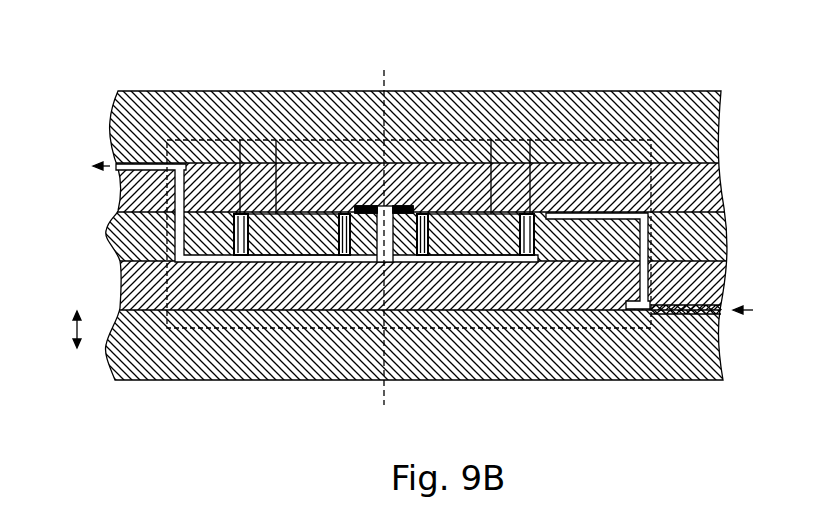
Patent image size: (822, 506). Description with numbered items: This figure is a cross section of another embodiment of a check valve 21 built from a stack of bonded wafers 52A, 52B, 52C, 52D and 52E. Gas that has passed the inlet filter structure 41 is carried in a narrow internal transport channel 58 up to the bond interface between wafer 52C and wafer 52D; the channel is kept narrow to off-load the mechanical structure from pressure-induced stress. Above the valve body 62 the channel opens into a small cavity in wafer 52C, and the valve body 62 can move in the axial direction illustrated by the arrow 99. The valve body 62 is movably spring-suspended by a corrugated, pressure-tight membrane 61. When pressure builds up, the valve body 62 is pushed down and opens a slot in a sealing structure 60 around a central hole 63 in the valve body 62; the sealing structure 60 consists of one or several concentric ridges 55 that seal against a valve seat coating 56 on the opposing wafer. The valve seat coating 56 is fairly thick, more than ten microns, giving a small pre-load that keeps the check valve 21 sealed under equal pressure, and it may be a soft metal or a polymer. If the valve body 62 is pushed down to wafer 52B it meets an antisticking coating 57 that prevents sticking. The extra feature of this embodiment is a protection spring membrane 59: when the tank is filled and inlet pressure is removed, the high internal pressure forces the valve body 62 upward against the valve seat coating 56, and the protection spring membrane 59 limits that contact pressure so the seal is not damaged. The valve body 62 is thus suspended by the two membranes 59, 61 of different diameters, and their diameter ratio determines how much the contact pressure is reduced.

The wafer 52E is at (710, 110).
The wafer 52D is at (712, 166).
The wafer 52C is at (714, 205).
The wafer 52B is at (715, 272).
The wafer 52A is at (710, 333).
The internal transport channel 58 is at (640, 245).
The inlet filter structure 41 is at (670, 305).
The check valve 21 is at (608, 320).
The corrugated pressure-tight membrane 61 is at (232, 132).
The protection spring membrane 59 is at (268, 132).
The antisticking coating 57 is at (282, 248).
The valve body 62 is at (278, 240).
The central hole 63 is at (380, 254).
The ridges 55 is at (366, 198).
The sealing structure 60 is at (358, 198).
The valve seat coating 56 is at (350, 198).
The arrow 99 is at (58, 329).